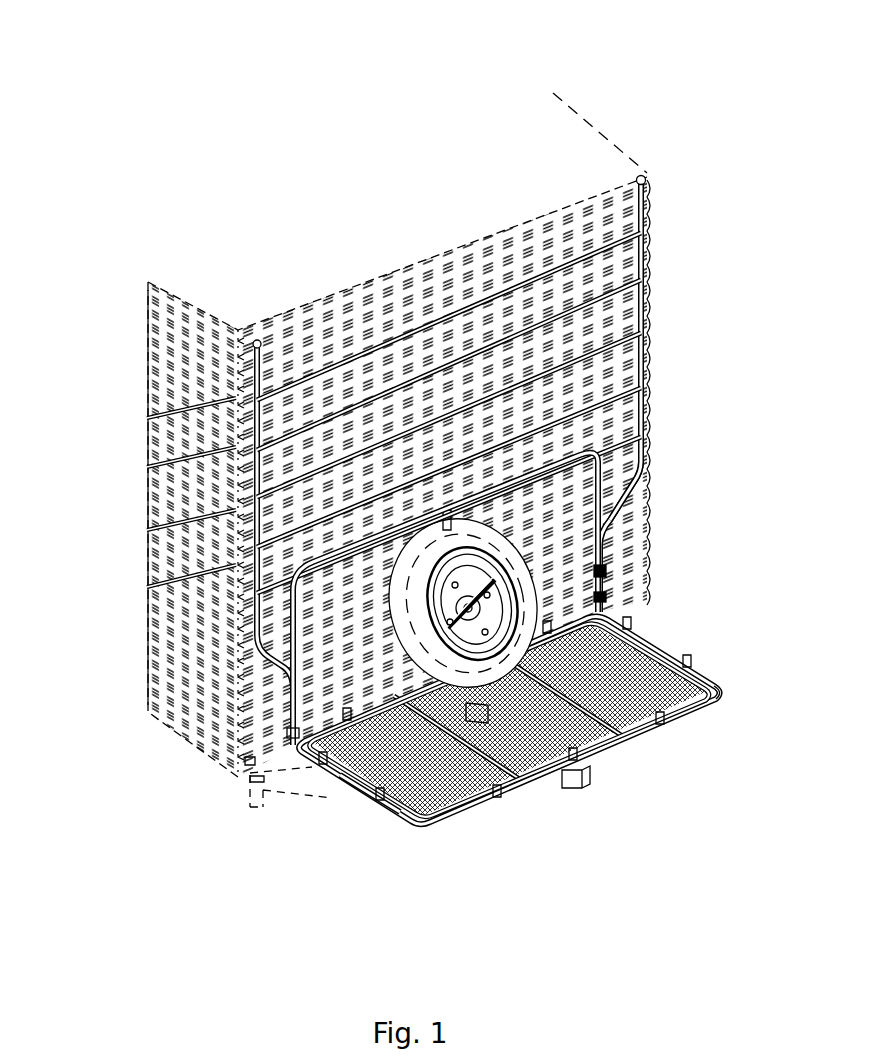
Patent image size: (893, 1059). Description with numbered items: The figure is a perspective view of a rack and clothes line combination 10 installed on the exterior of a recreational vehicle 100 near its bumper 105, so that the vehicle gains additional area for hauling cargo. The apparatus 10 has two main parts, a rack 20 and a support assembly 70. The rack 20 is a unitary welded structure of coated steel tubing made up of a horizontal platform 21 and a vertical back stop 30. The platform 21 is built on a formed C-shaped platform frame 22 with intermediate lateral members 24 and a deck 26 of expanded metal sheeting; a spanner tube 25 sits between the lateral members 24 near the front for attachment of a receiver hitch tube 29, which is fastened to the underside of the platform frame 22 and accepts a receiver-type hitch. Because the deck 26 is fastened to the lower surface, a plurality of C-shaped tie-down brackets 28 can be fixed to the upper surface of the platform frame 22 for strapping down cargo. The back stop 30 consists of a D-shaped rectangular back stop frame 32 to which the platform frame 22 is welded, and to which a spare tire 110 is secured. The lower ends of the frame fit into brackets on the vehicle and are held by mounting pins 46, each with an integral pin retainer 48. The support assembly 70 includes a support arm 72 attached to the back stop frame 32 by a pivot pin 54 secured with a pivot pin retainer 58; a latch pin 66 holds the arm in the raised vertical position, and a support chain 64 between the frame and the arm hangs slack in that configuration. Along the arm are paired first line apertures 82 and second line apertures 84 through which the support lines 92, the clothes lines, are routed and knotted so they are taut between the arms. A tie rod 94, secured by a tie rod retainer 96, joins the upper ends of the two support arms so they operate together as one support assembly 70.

The rack and clothes line combination 10 is at (220, 146).
The rack 20 is at (705, 587).
The platform 21 is at (407, 830).
The platform frame 22 is at (690, 712).
The intermediate lateral members 24 is at (630, 742).
The spanner tube 25 is at (668, 648).
The deck 26 is at (720, 682).
The tie-down brackets 28 is at (378, 797).
The receiver hitch tube 29 is at (584, 784).
The back stop 30 is at (645, 514).
The back stop frame 32 is at (613, 523).
The mounting pin 46 is at (247, 760).
The pin retainer 48 is at (255, 779).
The pivot pin 54 is at (606, 610).
The pivot pin retainer 58 is at (283, 733).
The support chain 64 is at (610, 572).
The latch pin 66 is at (612, 595).
The support assembly 70 is at (649, 359).
The support arm 72 is at (650, 312).
The first line apertures 82 is at (646, 235).
The second line apertures 84 is at (147, 530).
The support lines 92 is at (147, 418).
The tie rod 94 is at (646, 180).
The tie rod retainer 96 is at (148, 283).
The recreational vehicle 100 is at (147, 417).
The bumper 105 is at (282, 802).
The spare tire 110 is at (637, 467).